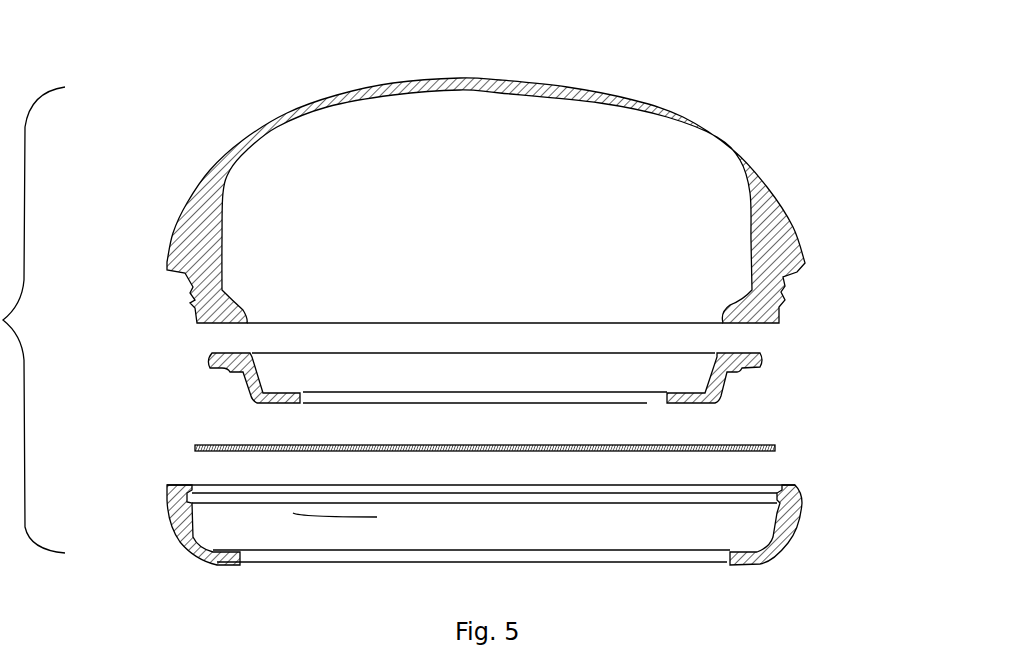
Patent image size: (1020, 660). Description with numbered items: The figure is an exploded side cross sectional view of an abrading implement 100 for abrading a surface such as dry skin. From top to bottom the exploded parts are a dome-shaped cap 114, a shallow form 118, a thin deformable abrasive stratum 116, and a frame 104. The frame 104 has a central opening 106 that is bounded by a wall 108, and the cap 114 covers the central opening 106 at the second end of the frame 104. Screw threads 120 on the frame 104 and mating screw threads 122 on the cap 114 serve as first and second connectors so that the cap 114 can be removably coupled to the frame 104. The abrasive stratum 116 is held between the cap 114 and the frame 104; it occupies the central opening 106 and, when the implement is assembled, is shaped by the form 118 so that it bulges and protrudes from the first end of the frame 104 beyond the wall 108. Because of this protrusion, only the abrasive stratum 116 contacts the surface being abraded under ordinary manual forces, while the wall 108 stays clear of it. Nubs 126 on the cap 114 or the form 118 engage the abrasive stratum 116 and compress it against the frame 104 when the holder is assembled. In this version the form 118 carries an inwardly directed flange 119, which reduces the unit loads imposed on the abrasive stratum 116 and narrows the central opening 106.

The abrading implement 100 is at (726, 48).
The frame 104 is at (812, 530).
The central opening 106 is at (666, 400).
The wall 108 is at (171, 520).
The cap 114 is at (814, 211).
The abrasive stratum 116 is at (792, 447).
The form 118 is at (776, 365).
The inwardly directed flange 119 is at (280, 394).
The screw threads 120 is at (310, 493).
The screw threads 122 is at (193, 288).
The nubs 126 is at (235, 369).